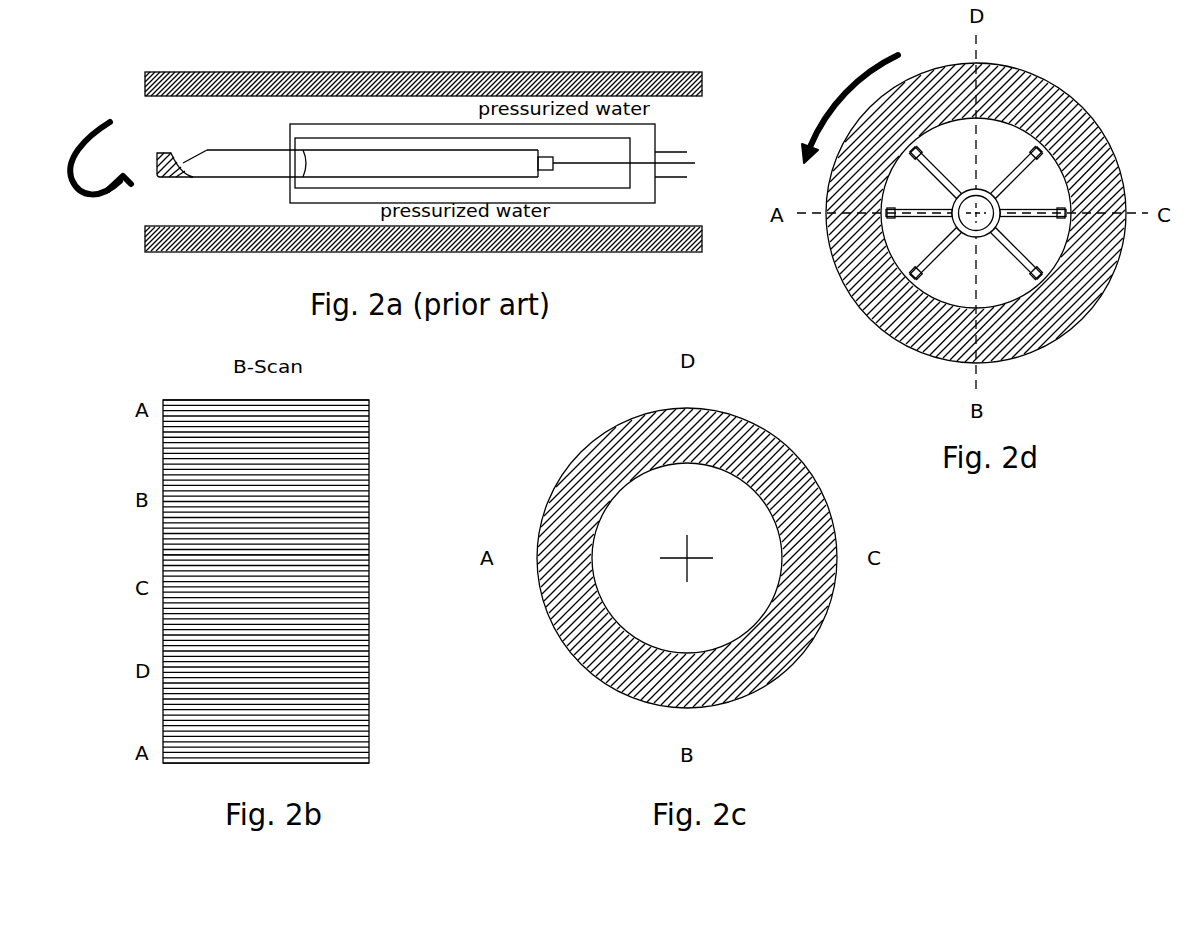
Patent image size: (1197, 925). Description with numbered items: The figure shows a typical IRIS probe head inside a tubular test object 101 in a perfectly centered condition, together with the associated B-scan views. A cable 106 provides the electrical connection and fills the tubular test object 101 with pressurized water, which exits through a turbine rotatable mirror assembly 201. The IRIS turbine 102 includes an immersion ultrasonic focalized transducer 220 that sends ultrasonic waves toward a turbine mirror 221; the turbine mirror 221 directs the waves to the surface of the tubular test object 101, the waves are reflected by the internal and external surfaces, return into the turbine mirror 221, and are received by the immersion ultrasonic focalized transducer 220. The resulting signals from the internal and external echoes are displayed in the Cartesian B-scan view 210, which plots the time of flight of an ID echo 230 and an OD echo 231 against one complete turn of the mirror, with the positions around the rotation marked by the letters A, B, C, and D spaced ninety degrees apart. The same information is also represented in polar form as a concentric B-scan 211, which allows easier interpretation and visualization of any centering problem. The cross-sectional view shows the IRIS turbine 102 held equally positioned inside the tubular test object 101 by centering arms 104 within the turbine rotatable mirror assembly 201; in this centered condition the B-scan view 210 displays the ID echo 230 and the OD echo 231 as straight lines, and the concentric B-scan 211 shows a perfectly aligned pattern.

In FIG. 2A, the tubular test object 101 is at (203, 240).
In FIG. 2D, the tubular test object 101 is at (890, 315).
In FIG. 2A, the IRIS turbine 102 is at (612, 181).
In FIG. 2D, the IRIS turbine 102 is at (951, 206).
In FIG. 2D, the centering arms 104 is at (1017, 255).
In FIG. 2A, the cable 106 is at (676, 161).
In FIG. 2A, the turbine rotatable mirror assembly 201 is at (258, 165).
In FIG. 2D, the turbine rotatable mirror assembly 201 is at (984, 205).
In FIG. 2A, the immersion ultrasonic focalized transducer 220 is at (453, 163).
In FIG. 2A, the turbine mirror 221 is at (176, 170).
In FIG. 2B, the B-scan view 210 is at (343, 473).
In FIG. 2C, the concentric B-scan 211 is at (763, 463).
In FIG. 2B, the ID echo 230 is at (163, 437).
In FIG. 2B, the OD echo 231 is at (369, 553).